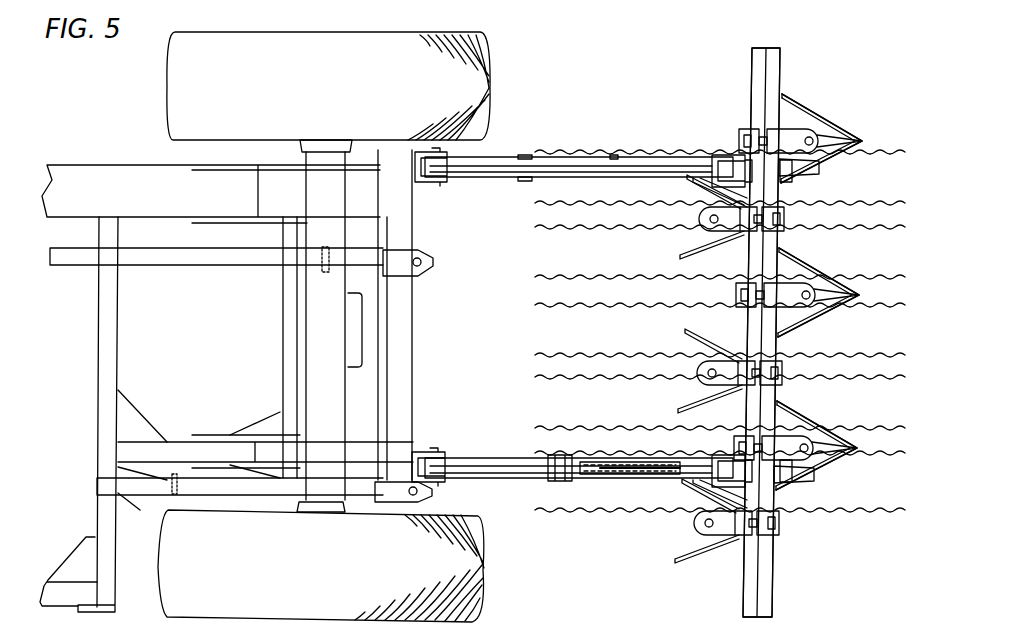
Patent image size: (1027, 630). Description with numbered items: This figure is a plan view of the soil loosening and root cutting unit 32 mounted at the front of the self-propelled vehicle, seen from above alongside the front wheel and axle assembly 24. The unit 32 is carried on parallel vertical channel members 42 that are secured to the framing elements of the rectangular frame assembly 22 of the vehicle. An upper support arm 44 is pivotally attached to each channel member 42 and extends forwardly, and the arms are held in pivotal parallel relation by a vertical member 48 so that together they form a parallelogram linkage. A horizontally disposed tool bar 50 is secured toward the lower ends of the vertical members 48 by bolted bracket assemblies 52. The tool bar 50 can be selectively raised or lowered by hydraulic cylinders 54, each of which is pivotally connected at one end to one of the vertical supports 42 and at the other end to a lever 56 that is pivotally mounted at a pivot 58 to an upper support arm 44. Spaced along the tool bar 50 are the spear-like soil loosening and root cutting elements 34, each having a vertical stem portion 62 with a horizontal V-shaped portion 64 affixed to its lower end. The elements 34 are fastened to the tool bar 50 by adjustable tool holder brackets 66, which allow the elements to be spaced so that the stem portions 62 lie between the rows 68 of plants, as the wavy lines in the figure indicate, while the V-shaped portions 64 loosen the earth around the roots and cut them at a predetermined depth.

The frame assembly 22 is at (240, 265).
The front wheel and axle assembly 24 is at (478, 568).
The soil loosening and root cutting unit 32 is at (790, 69).
The soil loosening and root cutting element 34 is at (857, 138).
The vertical channel member 42 is at (440, 183).
The upper support arm 44 is at (507, 158).
The vertical member 48 is at (733, 160).
The tool bar 50 is at (752, 72).
The bolted bracket assembly 52 is at (822, 173).
The hydraulic cylinder 54 is at (515, 183).
The lever 56 is at (645, 480).
The pivot 58 is at (620, 178).
The vertical stem portion 62 is at (812, 139).
The horizontal V-shaped portion 64 is at (795, 112).
The adjustable tool holder bracket 66 is at (750, 130).
The row of plants 68 is at (555, 226).